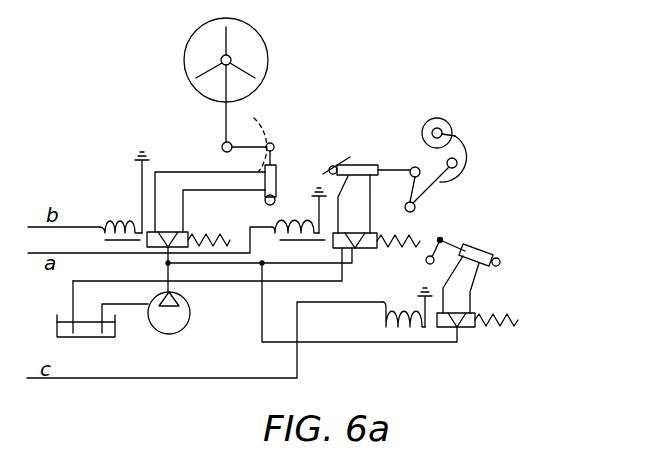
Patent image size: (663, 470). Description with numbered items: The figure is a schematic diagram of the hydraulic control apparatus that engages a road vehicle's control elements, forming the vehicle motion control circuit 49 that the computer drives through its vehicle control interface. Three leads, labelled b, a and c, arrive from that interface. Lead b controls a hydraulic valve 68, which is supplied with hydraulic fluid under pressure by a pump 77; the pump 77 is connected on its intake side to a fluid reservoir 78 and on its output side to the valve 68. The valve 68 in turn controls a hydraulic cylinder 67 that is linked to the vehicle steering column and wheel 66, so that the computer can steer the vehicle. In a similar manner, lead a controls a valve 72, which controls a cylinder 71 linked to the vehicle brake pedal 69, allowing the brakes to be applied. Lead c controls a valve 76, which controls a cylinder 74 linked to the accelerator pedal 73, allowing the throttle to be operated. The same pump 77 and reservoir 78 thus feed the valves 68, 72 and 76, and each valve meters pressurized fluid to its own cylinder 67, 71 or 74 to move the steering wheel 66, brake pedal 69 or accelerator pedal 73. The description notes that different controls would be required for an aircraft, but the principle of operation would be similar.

The vehicle motion control circuit 49 is at (545, 148).
The wheel 66 is at (268, 62).
The hydraulic cylinder 67 is at (278, 183).
The hydraulic valve 68 is at (167, 230).
The brake pedal 69 is at (453, 128).
The cylinder 71 is at (363, 165).
The valve 72 is at (371, 249).
The accelerator pedal 73 is at (441, 239).
The cylinder 74 is at (490, 246).
The valve 76 is at (472, 328).
The pump 77 is at (190, 313).
The fluid reservoir 78 is at (115, 327).